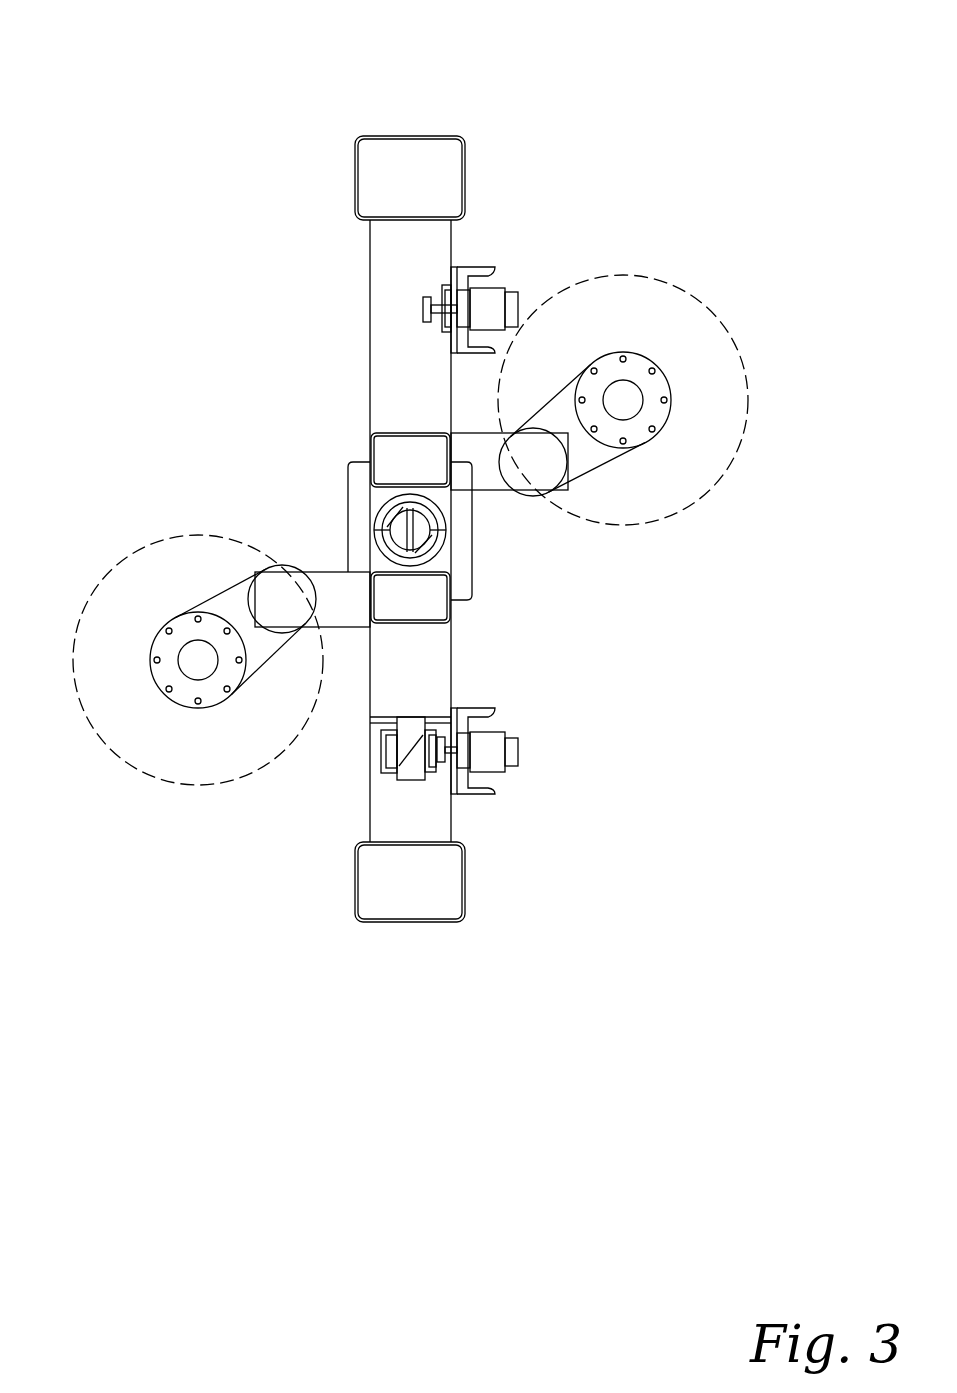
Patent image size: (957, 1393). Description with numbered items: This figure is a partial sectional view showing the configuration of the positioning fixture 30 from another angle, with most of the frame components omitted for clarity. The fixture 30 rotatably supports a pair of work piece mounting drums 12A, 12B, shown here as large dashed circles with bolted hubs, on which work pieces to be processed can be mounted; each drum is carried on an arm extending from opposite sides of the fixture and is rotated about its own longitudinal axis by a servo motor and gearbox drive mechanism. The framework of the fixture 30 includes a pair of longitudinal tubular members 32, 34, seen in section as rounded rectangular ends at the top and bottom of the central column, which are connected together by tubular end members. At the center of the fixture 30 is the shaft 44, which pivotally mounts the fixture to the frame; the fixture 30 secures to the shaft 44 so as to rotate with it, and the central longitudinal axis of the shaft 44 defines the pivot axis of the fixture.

The fixture 30 is at (482, 95).
The longitudinal tubular member 32 is at (466, 160).
The longitudinal tubular member 34 is at (466, 885).
The shaft 44 is at (422, 537).
The work piece mounting drum 12A is at (133, 757).
The work piece mounting drum 12B is at (688, 310).